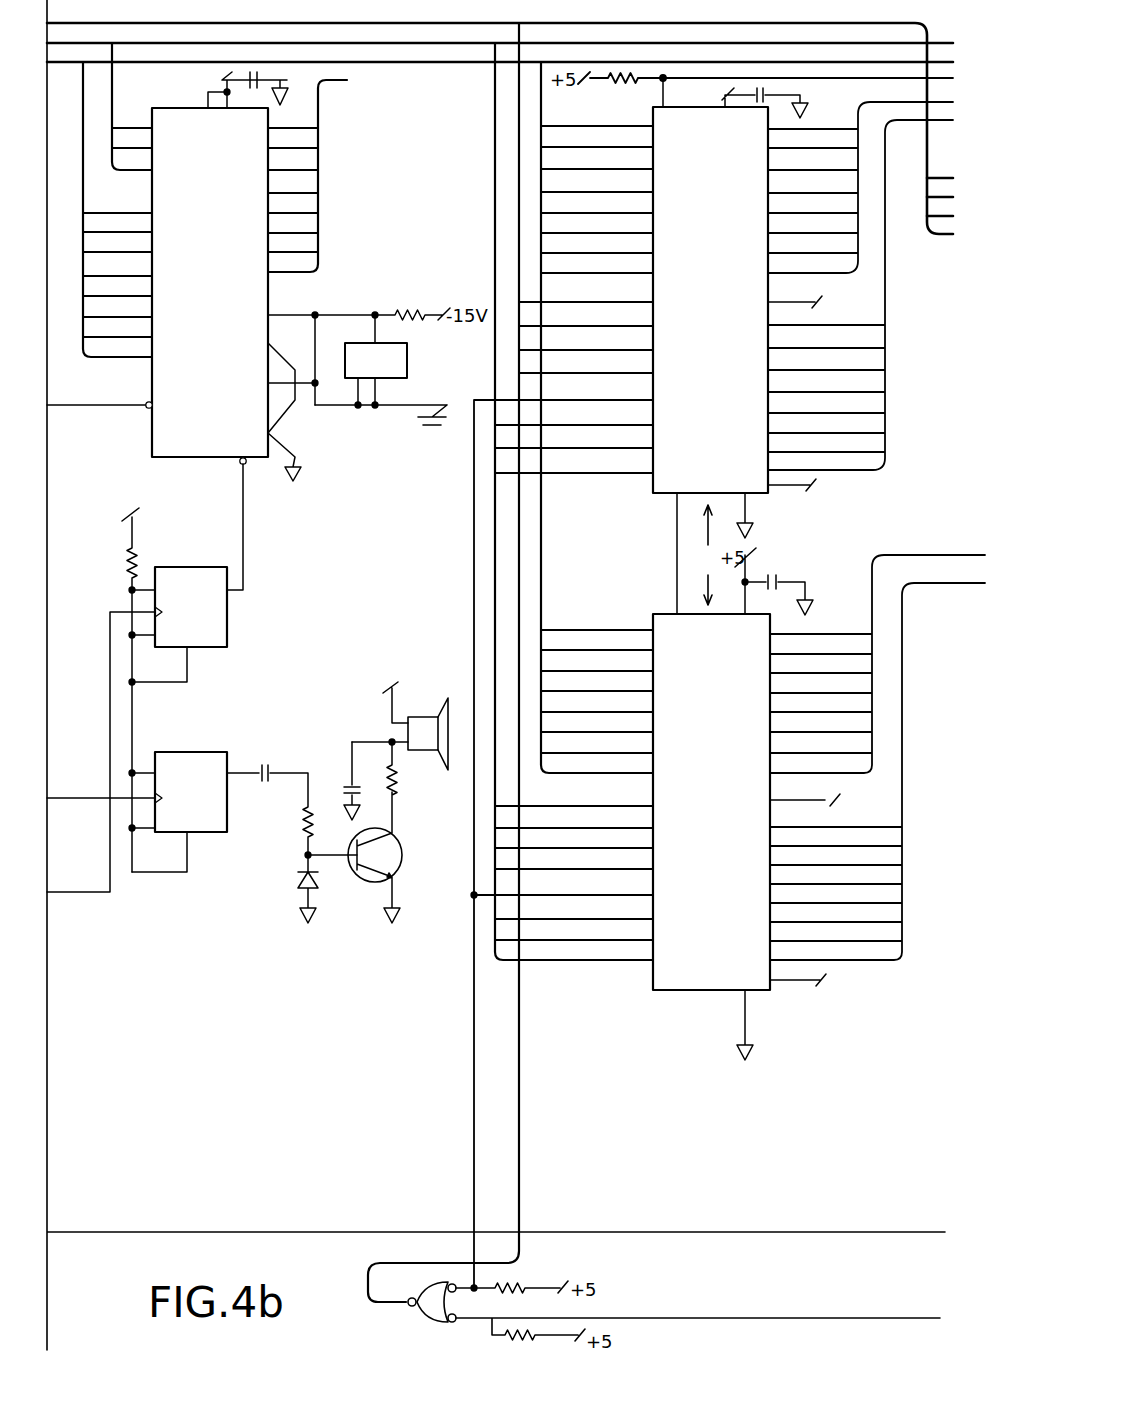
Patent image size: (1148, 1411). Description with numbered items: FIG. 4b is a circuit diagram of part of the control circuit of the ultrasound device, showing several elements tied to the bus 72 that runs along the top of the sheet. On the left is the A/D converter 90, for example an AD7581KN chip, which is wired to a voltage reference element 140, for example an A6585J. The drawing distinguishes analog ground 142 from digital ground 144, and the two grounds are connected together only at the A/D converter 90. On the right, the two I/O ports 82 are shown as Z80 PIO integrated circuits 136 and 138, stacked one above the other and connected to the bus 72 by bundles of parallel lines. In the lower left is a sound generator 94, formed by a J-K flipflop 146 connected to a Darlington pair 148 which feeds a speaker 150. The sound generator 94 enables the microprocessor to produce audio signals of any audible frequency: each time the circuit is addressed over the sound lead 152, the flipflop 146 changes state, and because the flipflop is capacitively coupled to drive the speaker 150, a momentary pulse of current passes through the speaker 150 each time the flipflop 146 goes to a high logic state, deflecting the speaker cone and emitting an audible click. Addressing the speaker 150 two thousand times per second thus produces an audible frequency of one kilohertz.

The bus 72 is at (440, 14).
The I/O ports 82 is at (709, 555).
The A/D converter 90 is at (152, 425).
The sound generator 94 is at (323, 636).
The Z80 PIO integrated circuit 136 is at (651, 496).
The Z80 PIO integrated circuit 138 is at (653, 617).
The voltage reference element 140 is at (407, 362).
The analog ground 142 is at (484, 837).
The digital ground 144 is at (295, 463).
The J-K flipflop 146 is at (210, 752).
The Darlington pair 148 is at (398, 870).
The speaker 150 is at (420, 717).
The sound lead 152 is at (81, 797).